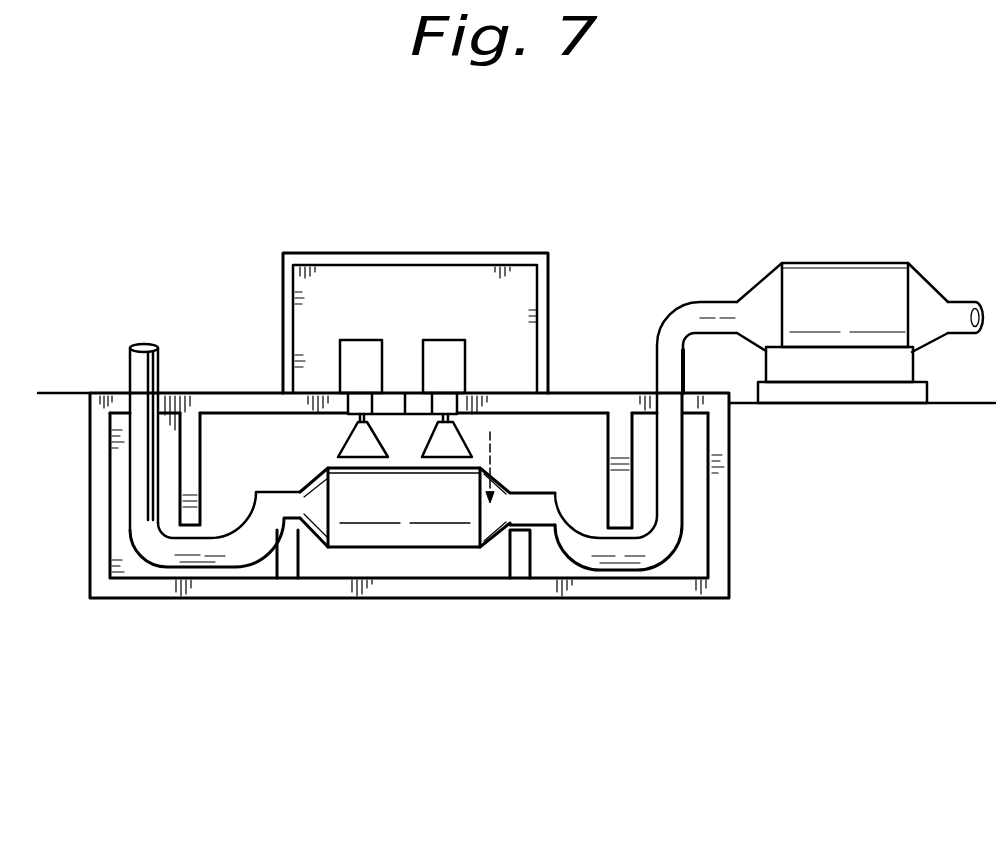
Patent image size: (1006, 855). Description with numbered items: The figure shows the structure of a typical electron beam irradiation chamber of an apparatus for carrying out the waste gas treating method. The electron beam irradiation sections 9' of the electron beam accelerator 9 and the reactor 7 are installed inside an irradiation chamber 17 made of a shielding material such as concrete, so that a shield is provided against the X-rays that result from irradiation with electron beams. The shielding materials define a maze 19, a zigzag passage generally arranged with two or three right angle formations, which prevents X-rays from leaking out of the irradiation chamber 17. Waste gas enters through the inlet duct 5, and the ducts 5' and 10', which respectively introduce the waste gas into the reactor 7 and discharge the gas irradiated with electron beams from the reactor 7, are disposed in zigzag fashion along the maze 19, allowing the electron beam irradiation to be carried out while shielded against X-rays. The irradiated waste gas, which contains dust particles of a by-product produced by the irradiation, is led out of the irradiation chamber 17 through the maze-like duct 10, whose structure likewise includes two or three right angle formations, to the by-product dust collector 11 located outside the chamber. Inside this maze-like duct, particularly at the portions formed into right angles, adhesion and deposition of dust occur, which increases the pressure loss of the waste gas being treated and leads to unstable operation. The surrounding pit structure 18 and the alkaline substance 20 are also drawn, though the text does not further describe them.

The waste gas introduction duct 5 is at (160, 419).
The duct for introducing waste gas into the reactor 5' is at (215, 573).
The reactor 7 is at (407, 535).
The electron beam accelerator 9 is at (415, 323).
The electron beam irradiation sections 9' is at (405, 402).
The maze-like duct 10 is at (670, 347).
The duct for discharging irradiated gas from the reactor 10' is at (618, 520).
The by-product dust collector 11 is at (843, 277).
The irradiation chamber 17 is at (237, 427).
The pit 18 is at (731, 486).
The maze 19 is at (123, 570).
The alkaline substance 20 is at (497, 425).